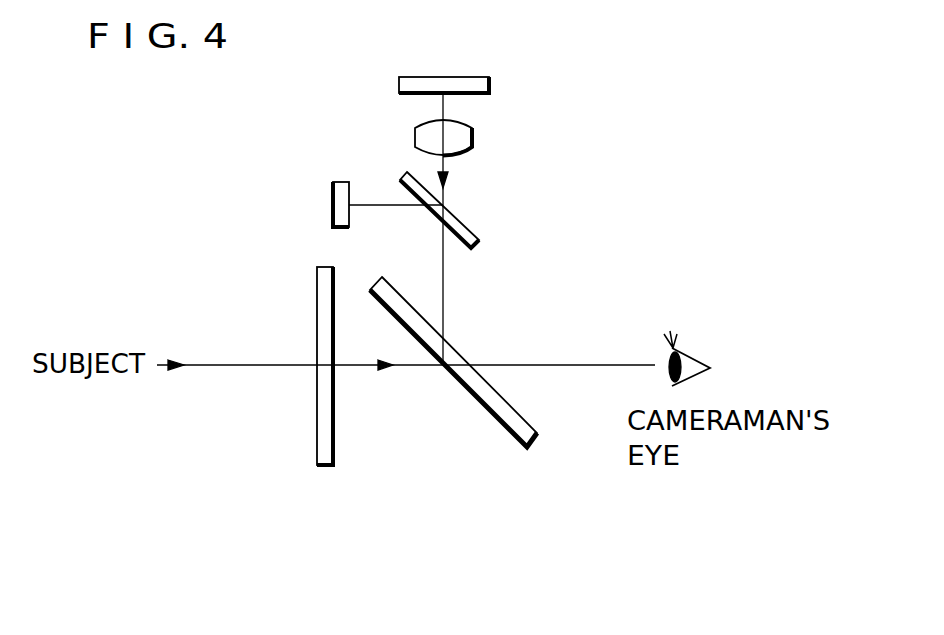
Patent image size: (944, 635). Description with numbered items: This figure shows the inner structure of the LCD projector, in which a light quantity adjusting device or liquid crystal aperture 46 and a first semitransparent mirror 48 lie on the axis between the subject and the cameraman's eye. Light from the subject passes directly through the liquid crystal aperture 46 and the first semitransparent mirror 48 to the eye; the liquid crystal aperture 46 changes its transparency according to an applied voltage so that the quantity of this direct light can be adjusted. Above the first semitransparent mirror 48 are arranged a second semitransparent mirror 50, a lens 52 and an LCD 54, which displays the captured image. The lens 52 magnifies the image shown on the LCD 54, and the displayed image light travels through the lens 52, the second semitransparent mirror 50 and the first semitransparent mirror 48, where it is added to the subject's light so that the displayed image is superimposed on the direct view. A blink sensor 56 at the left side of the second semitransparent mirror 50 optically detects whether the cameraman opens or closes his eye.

The liquid crystal aperture 46 is at (320, 445).
The first semitransparent mirror 48 is at (510, 432).
The second semitransparent mirror 50 is at (476, 226).
The lens 52 is at (472, 135).
The LCD 54 is at (489, 82).
The blink sensor 56 is at (342, 180).